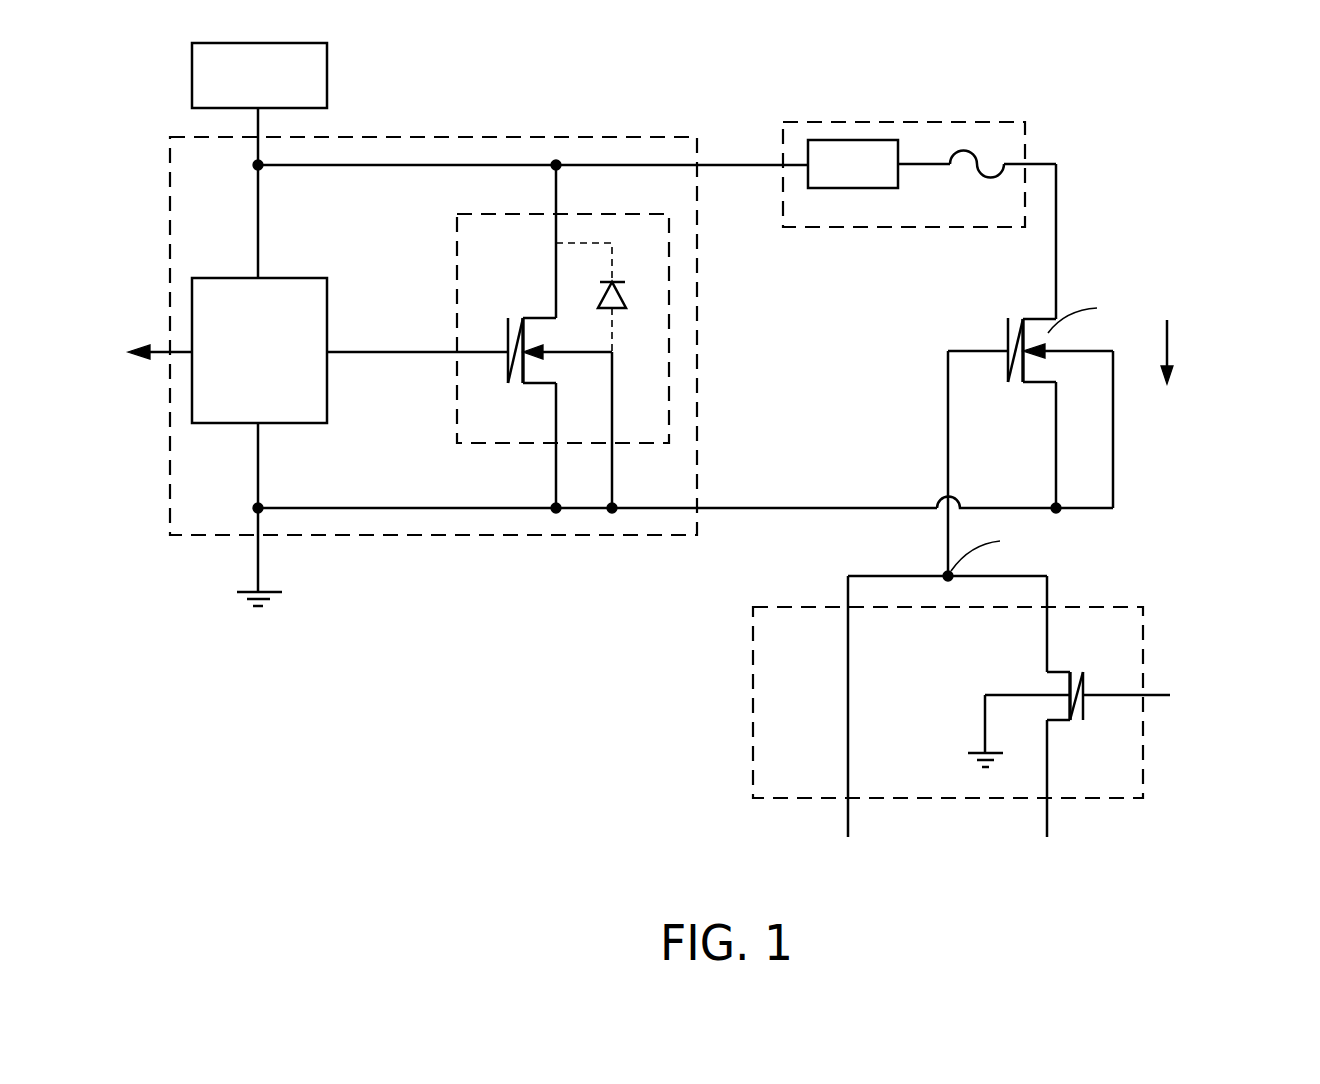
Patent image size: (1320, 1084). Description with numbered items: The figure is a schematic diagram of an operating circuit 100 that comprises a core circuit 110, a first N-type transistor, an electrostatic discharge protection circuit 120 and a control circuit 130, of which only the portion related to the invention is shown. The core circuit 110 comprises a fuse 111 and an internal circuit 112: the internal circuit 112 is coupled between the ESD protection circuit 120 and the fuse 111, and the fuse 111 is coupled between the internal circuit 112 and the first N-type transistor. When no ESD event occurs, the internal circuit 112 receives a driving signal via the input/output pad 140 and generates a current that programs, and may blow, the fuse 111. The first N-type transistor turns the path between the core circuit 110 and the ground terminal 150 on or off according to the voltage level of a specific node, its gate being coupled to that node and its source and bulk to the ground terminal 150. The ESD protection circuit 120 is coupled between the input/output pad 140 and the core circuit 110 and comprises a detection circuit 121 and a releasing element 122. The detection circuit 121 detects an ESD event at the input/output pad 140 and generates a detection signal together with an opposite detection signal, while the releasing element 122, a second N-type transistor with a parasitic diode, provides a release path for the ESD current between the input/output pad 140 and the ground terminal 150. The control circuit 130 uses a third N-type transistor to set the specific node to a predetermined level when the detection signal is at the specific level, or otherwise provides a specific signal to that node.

The operating circuit 100 is at (1310, 86).
The core circuit 110 is at (1008, 122).
The fuse 111 is at (977, 178).
The internal circuit 112 is at (875, 178).
The ESD protection circuit 120 is at (596, 135).
The detection circuit 121 is at (297, 278).
The releasing element 122 is at (446, 437).
The control circuit 130 is at (1130, 604).
The input/output pad 140 is at (282, 88).
The ground terminal 150 is at (280, 602).